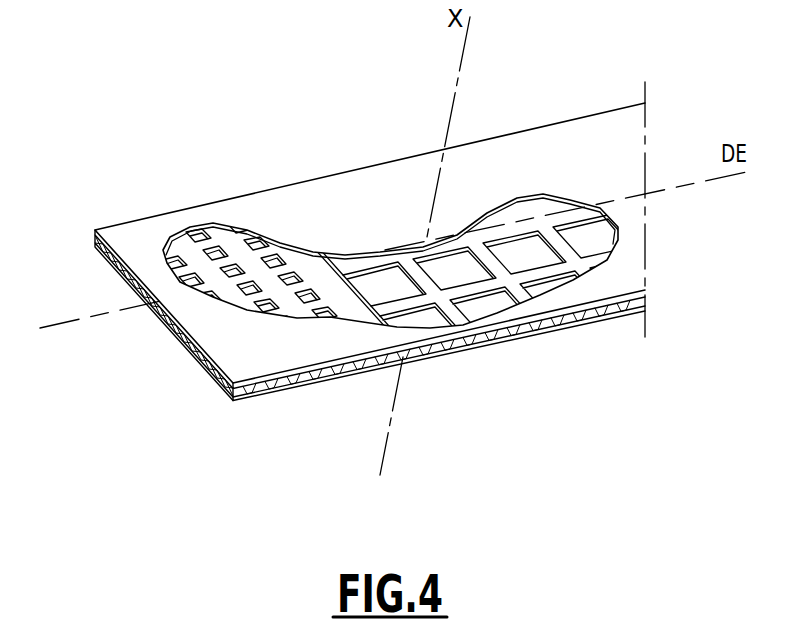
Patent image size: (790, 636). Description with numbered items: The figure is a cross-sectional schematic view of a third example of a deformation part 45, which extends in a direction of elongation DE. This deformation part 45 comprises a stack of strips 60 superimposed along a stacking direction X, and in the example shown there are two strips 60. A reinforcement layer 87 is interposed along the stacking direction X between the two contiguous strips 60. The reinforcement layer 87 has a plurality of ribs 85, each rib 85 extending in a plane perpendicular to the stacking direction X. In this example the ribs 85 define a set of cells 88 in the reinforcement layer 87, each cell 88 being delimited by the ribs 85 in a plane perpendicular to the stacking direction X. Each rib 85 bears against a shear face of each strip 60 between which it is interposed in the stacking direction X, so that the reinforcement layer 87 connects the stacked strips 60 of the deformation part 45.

The deformation part 45 is at (96, 185).
The strip 60 is at (495, 165).
The rib 85 is at (222, 247).
The reinforcement layer 87 is at (104, 278).
The cell 88 is at (542, 260).